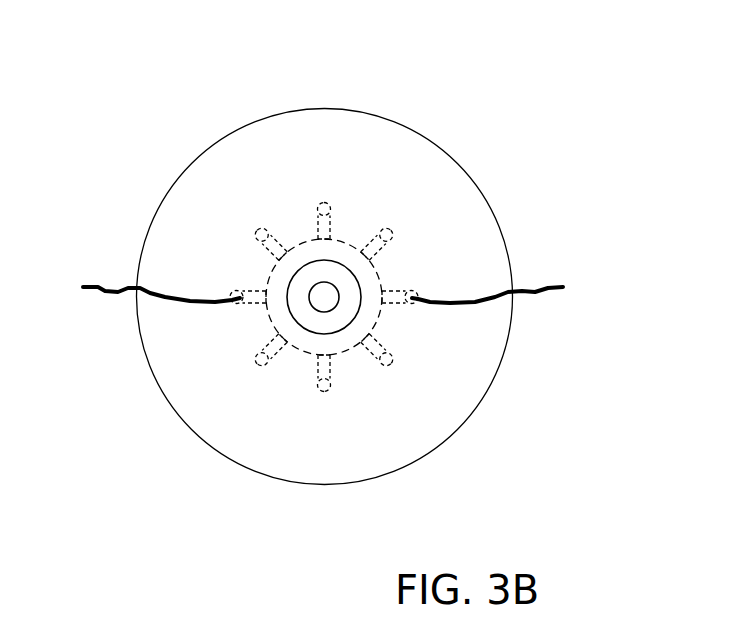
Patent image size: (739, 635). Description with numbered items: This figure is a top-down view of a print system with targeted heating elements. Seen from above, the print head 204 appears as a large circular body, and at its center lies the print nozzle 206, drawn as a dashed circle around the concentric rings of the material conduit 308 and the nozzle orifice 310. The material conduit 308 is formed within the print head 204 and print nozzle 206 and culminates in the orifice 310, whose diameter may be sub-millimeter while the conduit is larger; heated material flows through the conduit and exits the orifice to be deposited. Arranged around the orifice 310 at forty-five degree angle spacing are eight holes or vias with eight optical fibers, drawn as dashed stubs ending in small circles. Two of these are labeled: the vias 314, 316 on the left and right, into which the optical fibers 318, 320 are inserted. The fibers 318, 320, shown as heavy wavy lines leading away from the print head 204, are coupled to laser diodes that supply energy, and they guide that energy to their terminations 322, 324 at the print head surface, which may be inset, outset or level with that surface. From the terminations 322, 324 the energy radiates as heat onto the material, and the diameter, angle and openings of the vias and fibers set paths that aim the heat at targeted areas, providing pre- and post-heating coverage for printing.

The print head 204 is at (467, 97).
The print nozzle 206 is at (373, 320).
The material conduit 308 is at (338, 331).
The nozzle orifice 310 is at (315, 312).
The via 314 is at (230, 292).
The via 316 is at (385, 295).
The optical fiber 318 is at (140, 290).
The optical fiber 320 is at (508, 290).
The termination 322 is at (263, 293).
The termination 324 is at (387, 292).